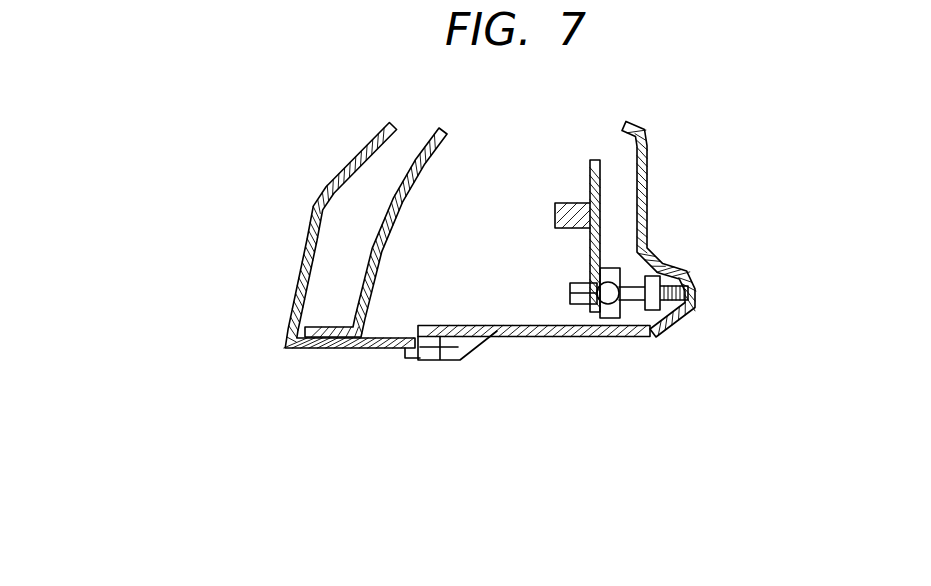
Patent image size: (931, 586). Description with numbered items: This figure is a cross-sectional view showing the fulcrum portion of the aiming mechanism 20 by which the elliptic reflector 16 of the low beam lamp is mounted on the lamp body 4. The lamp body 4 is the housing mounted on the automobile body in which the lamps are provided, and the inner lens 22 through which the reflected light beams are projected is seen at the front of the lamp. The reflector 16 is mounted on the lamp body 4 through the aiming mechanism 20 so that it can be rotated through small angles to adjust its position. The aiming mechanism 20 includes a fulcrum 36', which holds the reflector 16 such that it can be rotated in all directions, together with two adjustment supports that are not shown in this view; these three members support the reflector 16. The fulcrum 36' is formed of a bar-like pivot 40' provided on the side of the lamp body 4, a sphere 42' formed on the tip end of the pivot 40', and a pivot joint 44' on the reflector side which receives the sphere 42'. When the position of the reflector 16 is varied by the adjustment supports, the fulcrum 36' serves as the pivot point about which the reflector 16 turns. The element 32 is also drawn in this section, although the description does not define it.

The outer wall panel 32 is at (303, 262).
The inner lens 22 is at (382, 249).
The reflector 16 is at (590, 181).
The lamp body 4 is at (647, 187).
The fulcrum 36' is at (577, 278).
The aiming mechanism 20 is at (663, 293).
The bar-like pivot 40' is at (657, 337).
The sphere 42' is at (598, 340).
The pivot joint 44' is at (560, 278).